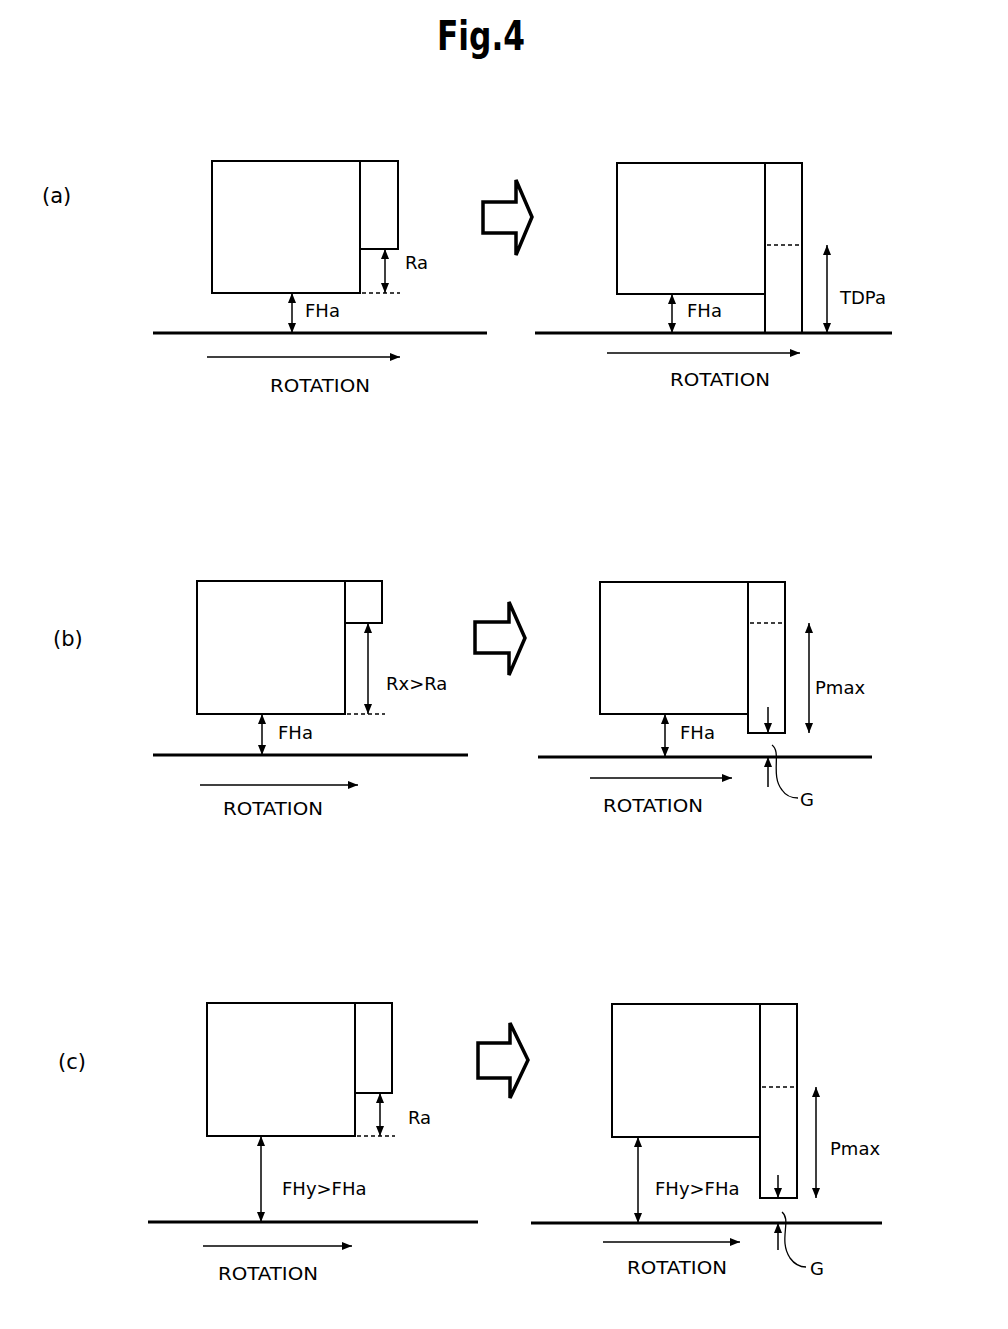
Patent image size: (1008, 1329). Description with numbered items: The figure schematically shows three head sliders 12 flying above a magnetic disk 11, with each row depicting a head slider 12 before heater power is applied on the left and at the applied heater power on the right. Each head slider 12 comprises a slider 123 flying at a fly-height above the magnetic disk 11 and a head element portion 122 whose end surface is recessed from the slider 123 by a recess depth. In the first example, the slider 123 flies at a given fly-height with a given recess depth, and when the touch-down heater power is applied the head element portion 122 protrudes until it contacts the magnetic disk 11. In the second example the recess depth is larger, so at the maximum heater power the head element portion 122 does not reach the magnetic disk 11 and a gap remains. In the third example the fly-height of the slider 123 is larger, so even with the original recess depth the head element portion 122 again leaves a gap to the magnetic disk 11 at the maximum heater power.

The magnetic disk 11 is at (505, 757).
The head slider 12 is at (481, 649).
The head element portion 122 is at (574, 650).
The slider 123 is at (481, 619).